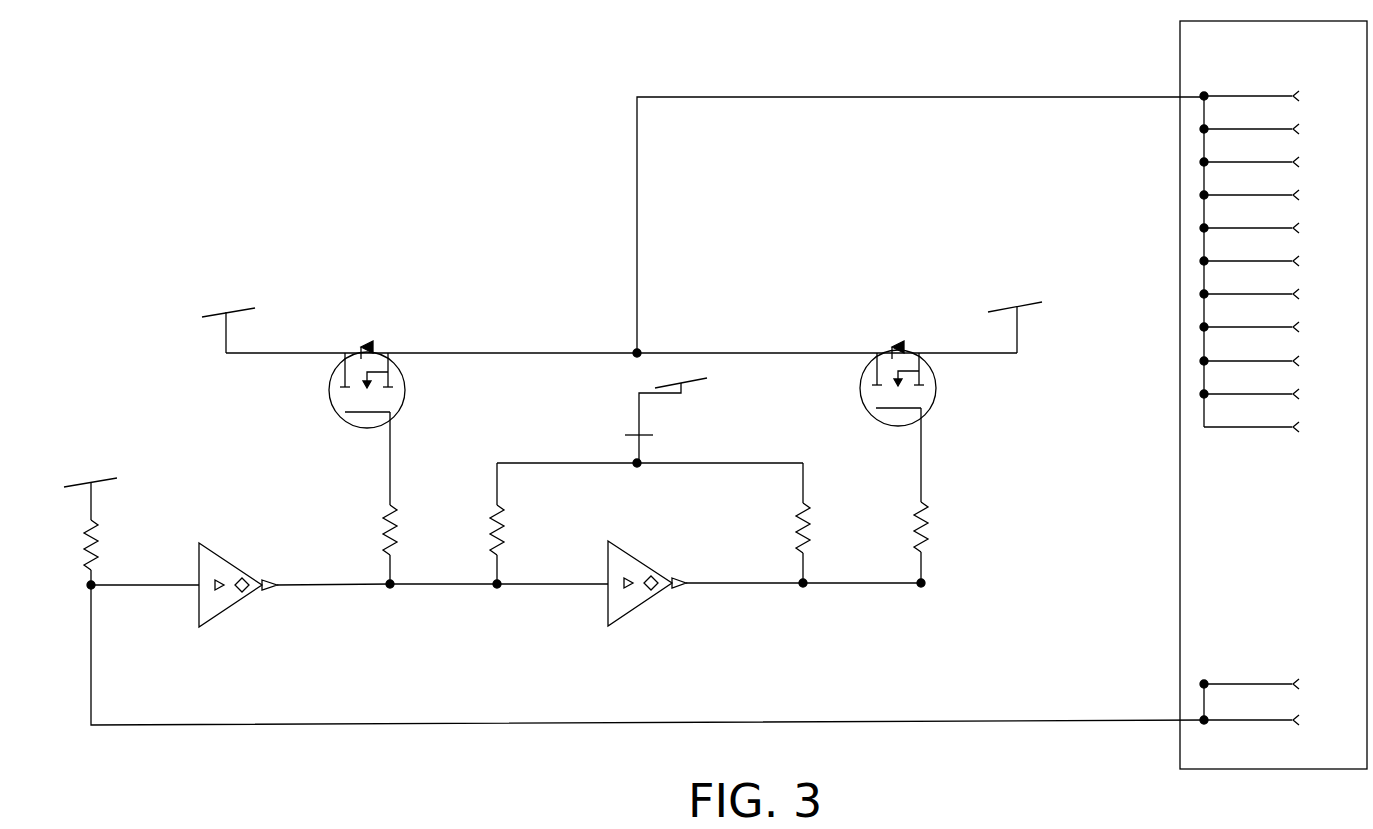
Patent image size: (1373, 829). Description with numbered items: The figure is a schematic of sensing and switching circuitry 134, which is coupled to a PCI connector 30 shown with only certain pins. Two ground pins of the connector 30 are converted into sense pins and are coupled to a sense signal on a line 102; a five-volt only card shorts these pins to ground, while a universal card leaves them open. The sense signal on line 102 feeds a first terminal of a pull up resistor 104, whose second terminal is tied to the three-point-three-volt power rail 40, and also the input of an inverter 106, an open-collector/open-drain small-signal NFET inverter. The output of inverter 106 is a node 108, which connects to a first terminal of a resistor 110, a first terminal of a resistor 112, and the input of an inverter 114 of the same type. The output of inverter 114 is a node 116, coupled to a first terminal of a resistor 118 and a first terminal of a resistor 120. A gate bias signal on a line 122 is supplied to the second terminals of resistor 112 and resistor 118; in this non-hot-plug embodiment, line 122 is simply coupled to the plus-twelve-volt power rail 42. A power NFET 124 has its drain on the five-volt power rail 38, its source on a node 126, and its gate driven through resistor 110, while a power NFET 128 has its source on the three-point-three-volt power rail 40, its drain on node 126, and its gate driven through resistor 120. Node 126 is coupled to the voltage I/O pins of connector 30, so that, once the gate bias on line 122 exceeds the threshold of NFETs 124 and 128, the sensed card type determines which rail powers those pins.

The PCI connector 30 is at (1180, 48).
The 5-volt power rail 38 is at (245, 306).
The 3.3-volt power rail 40 is at (1021, 308).
The +12-volt power rail 42 is at (688, 383).
The line 102 is at (515, 722).
The pull up resistor 104 is at (86, 556).
The inverter 106 is at (218, 612).
The node 108 is at (438, 588).
The resistor 110 is at (396, 541).
The resistor 112 is at (503, 541).
The inverter 114 is at (633, 610).
The node 116 is at (804, 588).
The resistor 118 is at (809, 533).
The resistor 120 is at (926, 549).
The line 122 is at (641, 445).
The power NFET 124 is at (382, 354).
The node 126 is at (641, 351).
The power NFET 128 is at (885, 353).
The sensing and switching circuitry 134 is at (509, 238).